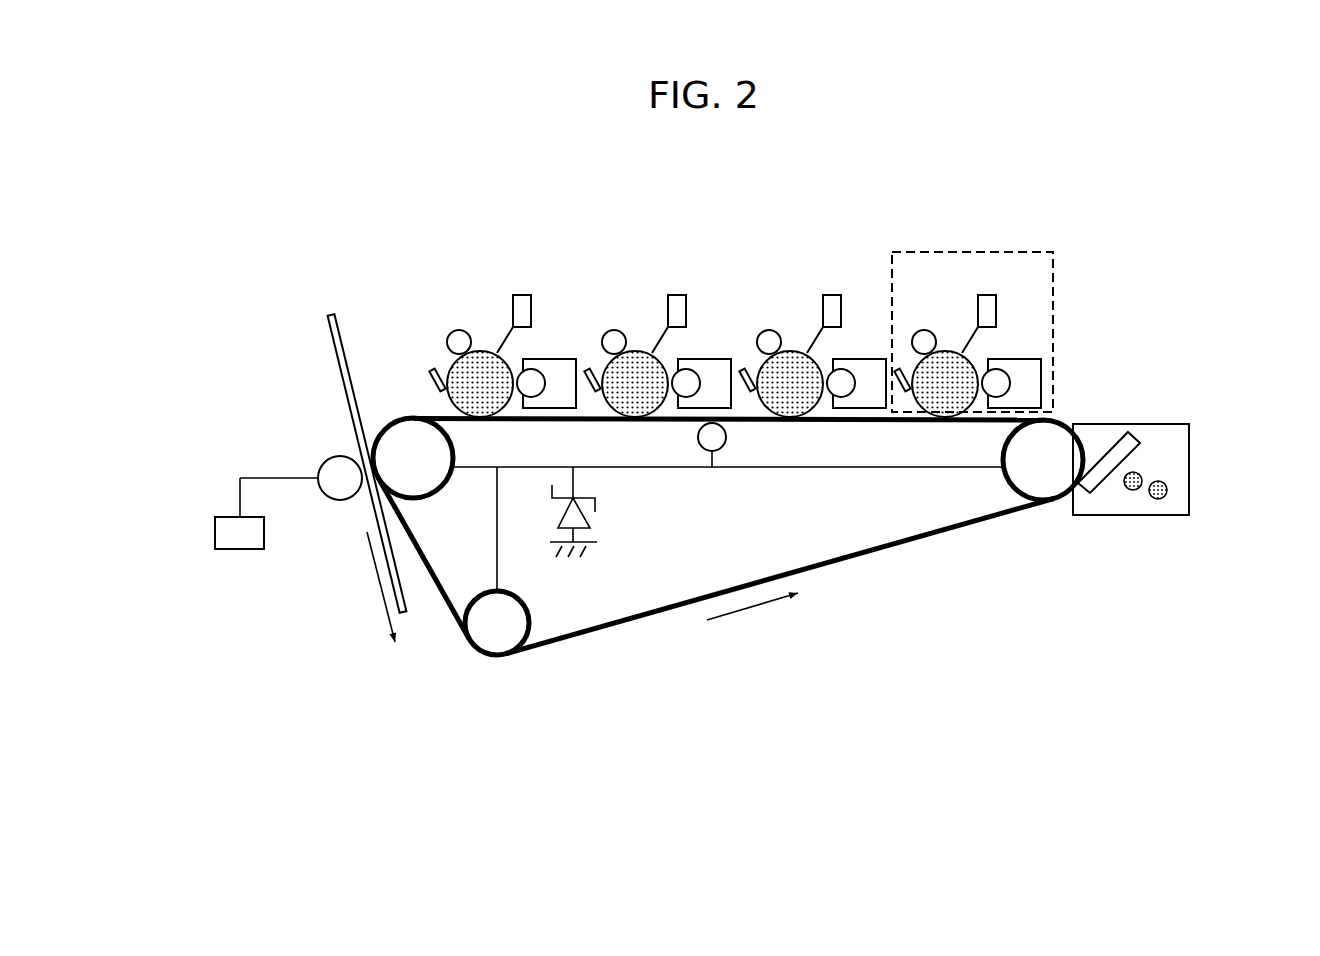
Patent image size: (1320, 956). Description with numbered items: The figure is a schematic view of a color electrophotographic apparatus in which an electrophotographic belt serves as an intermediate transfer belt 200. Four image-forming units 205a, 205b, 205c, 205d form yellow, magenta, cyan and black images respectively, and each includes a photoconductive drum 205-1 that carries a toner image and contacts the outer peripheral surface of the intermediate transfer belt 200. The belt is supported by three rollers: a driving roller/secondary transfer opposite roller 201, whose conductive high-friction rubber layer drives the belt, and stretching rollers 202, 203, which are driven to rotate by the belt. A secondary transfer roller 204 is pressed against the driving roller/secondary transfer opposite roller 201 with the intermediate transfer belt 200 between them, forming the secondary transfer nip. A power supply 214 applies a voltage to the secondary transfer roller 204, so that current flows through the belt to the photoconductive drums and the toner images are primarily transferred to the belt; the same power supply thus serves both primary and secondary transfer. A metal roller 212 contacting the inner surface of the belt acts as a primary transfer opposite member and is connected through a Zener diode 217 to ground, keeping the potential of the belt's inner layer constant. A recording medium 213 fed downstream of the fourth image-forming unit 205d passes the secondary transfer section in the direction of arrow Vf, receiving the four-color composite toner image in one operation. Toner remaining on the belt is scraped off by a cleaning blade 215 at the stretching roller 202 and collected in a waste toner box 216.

The intermediate transfer belt 200 is at (910, 543).
The driving roller/secondary transfer opposite roller 201 is at (390, 442).
The stretching roller 202 is at (1057, 437).
The stretching roller 203 is at (518, 627).
The secondary transfer roller 204 is at (335, 500).
The image-forming unit 205a is at (972, 316).
The image-forming unit 205b is at (812, 316).
The image-forming unit 205c is at (657, 316).
The image-forming unit 205d is at (453, 316).
The photoconductive drum 205-1 is at (446, 360).
The metal roller 212 is at (730, 450).
The recording medium 213 is at (327, 333).
The power supply 214 is at (215, 531).
The cleaning blade 215 is at (1107, 485).
The waste toner box 216 is at (1189, 470).
The Zener diode 217 is at (600, 510).
The direction of recording medium Vf is at (370, 587).